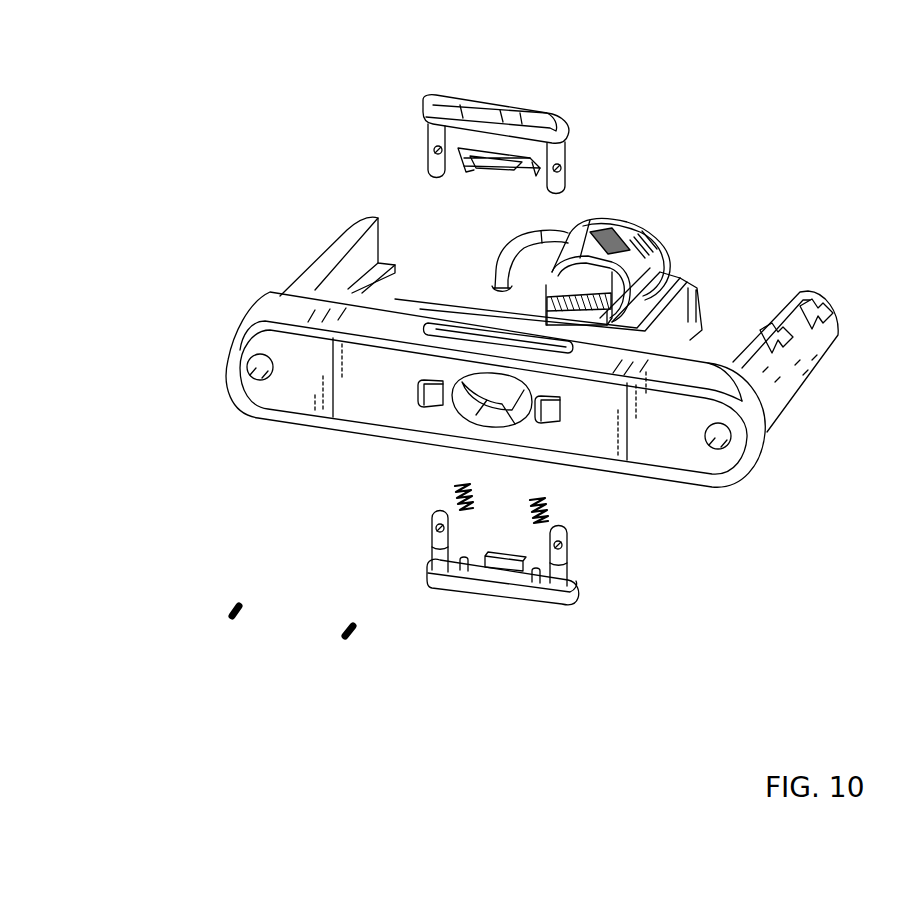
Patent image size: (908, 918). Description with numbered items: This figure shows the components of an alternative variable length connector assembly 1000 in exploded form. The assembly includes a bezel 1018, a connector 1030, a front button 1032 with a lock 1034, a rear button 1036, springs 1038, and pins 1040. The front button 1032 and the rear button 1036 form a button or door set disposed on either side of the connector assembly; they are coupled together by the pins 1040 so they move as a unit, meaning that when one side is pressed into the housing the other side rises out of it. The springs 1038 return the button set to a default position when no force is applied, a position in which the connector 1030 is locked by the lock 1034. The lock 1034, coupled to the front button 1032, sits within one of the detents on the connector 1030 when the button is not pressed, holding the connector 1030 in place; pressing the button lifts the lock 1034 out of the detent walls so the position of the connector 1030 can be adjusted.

The mounting assembly 1000 is at (282, 76).
The bezel 1018 is at (241, 412).
The connector 1030 is at (664, 224).
The front button 1032 is at (541, 110).
The lock 1034 is at (506, 176).
The rear button 1036 is at (494, 600).
The springs 1038 is at (450, 494).
The pins 1040 is at (228, 630).